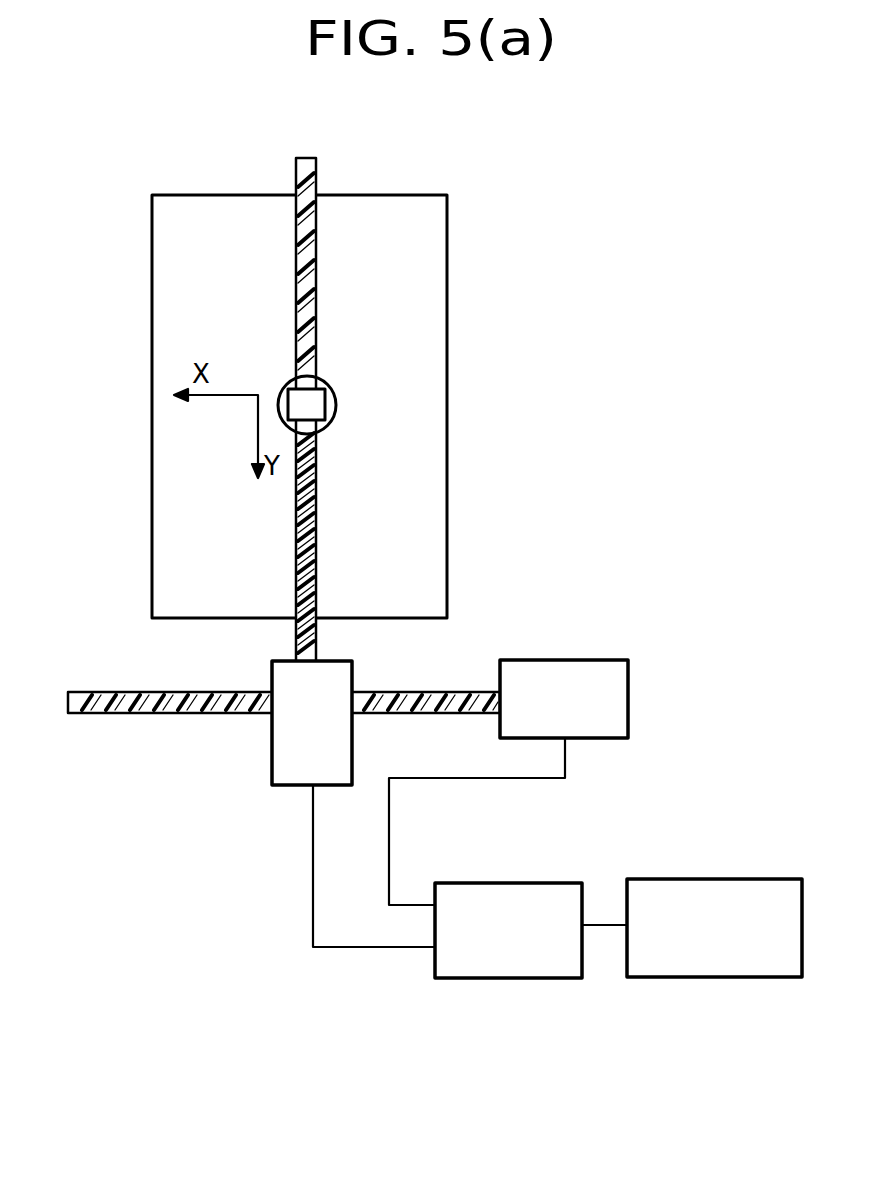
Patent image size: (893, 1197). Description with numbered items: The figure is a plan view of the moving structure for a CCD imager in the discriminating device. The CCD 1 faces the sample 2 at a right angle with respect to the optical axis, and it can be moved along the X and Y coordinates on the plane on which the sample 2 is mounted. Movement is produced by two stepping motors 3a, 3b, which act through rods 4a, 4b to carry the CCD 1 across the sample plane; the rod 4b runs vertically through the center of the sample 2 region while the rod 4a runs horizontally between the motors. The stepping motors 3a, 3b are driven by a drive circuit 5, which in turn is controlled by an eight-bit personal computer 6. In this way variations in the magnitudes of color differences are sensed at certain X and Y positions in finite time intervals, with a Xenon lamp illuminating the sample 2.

The CCD 1 is at (336, 392).
The sample 2 is at (433, 425).
The stepping motor 3a is at (340, 672).
The stepping motor 3b is at (618, 668).
The rod 4a is at (102, 692).
The rod 4b is at (297, 639).
The drive circuit 5 is at (535, 970).
The 8-bit personal computer 6 is at (708, 970).